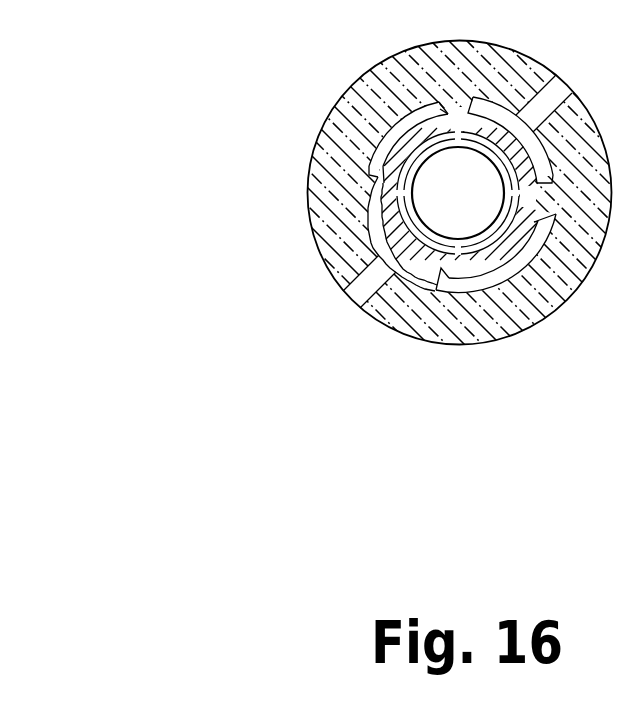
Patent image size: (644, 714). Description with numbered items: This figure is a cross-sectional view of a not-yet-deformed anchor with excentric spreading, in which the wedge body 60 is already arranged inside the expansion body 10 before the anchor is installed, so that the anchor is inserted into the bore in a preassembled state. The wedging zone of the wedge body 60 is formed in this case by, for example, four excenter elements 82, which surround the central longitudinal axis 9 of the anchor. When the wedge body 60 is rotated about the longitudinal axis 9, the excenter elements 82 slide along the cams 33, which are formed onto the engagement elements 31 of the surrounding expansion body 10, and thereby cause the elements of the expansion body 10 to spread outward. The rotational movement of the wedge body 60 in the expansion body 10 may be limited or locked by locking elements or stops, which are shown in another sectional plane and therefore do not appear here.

The longitudinal axis 9 is at (458, 193).
The expansion body 10 is at (328, 202).
The engagement elements 31 is at (418, 77).
The cams 33 is at (448, 105).
The wedge body 60 is at (402, 233).
The excenter elements 82 is at (380, 162).